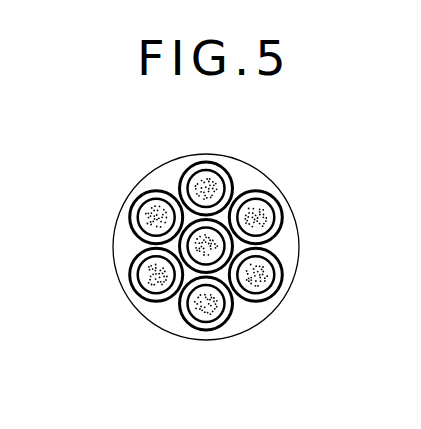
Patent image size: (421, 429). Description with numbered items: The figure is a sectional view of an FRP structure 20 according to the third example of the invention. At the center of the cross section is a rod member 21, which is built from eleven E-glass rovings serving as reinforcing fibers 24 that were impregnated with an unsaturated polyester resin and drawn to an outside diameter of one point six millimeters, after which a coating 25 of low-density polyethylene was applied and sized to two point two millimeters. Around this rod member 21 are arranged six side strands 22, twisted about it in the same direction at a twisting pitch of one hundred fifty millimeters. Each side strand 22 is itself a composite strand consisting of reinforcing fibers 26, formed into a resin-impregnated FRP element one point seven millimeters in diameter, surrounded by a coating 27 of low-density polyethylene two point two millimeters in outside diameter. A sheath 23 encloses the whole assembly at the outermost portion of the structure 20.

The FRP structure 20 is at (213, 240).
The rod member 21 is at (206, 245).
The side strands 22 is at (163, 220).
The sheath 23 is at (257, 320).
The reinforcing fibers 24 is at (201, 264).
The coating 25 is at (218, 264).
The reinforcing fibers 26 is at (142, 223).
The coating 27 is at (176, 189).